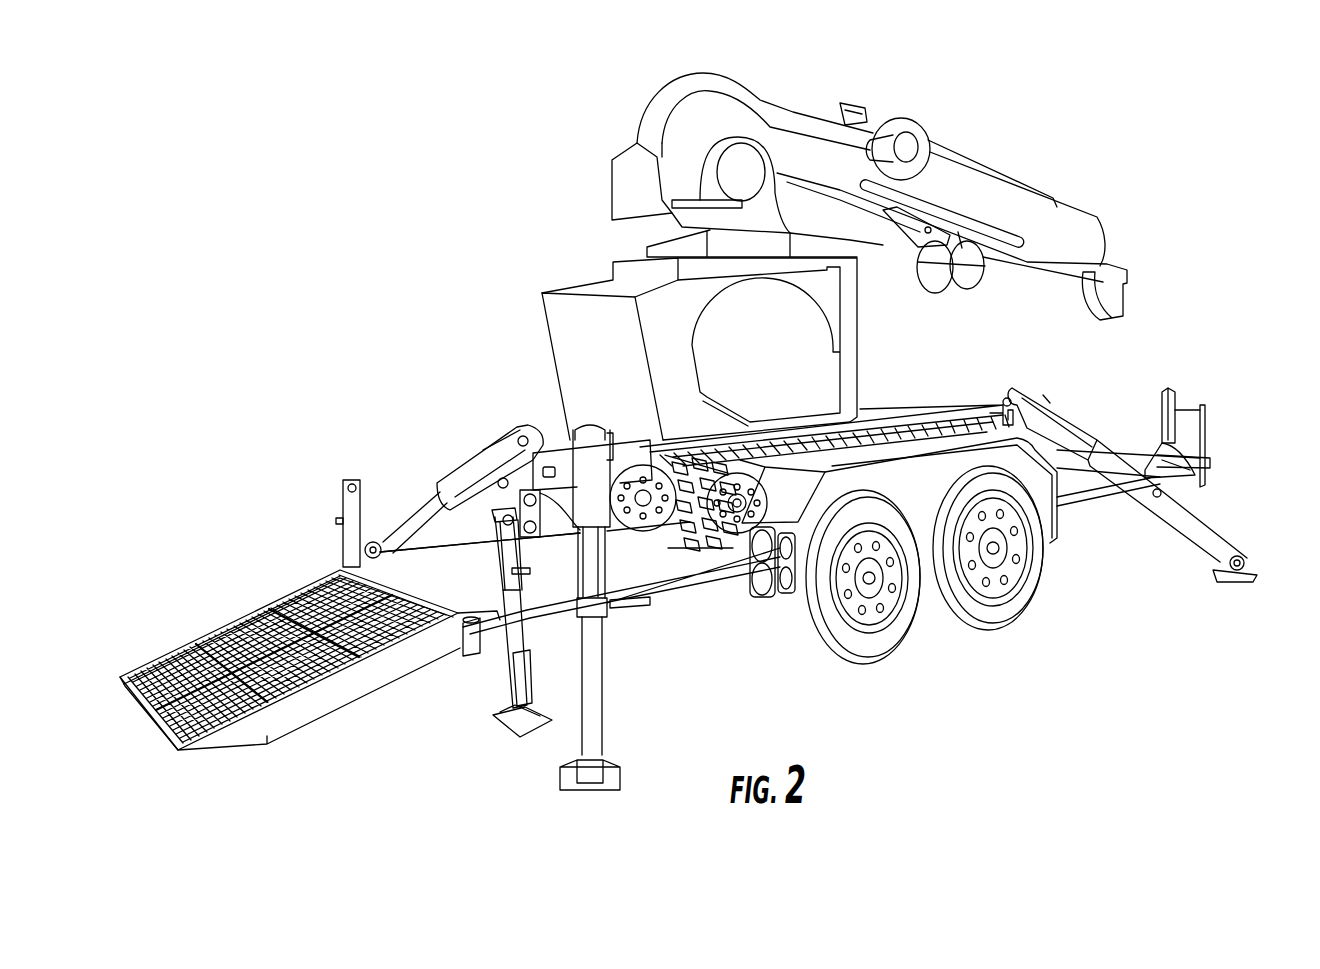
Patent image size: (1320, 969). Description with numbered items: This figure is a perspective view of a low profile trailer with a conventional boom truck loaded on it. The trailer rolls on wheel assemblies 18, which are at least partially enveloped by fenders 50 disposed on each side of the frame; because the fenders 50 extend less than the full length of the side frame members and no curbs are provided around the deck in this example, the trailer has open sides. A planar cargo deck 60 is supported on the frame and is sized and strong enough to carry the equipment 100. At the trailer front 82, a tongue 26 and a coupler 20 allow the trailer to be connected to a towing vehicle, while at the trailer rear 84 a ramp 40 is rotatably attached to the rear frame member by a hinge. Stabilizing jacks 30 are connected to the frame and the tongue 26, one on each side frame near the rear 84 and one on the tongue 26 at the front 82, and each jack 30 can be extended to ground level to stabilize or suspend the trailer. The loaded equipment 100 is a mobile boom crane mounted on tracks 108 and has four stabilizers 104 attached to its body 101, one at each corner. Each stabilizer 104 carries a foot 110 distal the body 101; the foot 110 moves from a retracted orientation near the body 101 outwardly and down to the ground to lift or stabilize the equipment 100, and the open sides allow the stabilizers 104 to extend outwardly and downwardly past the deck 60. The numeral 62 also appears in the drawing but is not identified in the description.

The wheel assemblies 18 is at (810, 643).
The coupler 20 is at (1200, 463).
The tongue 26 is at (1205, 433).
The stabilizing jack 30 is at (1167, 405).
The ramp 40 is at (335, 693).
The fender 50 is at (917, 447).
The cargo deck 60 is at (427, 567).
The linkage 62 is at (489, 585).
The trailer front 82 is at (1140, 437).
The trailer rear 84 is at (350, 548).
The equipment 100 is at (1005, 152).
The body 101 is at (643, 417).
The stabilizer 104 is at (1167, 510).
The tracks 108 is at (717, 553).
The foot 110 is at (562, 787).